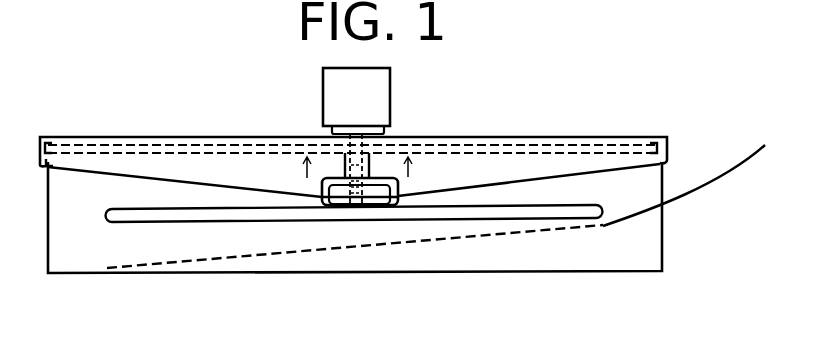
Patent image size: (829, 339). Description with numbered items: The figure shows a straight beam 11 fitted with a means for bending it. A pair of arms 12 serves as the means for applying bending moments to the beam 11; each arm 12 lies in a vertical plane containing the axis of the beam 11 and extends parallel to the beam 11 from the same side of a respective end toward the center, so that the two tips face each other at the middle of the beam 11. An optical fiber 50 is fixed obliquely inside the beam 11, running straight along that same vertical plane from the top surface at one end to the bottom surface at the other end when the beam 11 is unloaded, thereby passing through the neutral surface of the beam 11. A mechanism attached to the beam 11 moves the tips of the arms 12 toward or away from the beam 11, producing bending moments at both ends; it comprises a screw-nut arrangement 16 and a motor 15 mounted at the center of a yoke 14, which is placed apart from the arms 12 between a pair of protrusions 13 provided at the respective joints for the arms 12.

The straight beam 11 is at (228, 274).
The arms 12 is at (143, 195).
The protrusions 13 is at (60, 147).
The yoke 14 is at (193, 137).
The motor 15 is at (390, 92).
The screw-nut arrangement 16 is at (323, 183).
The optical fiber 50 is at (418, 241).